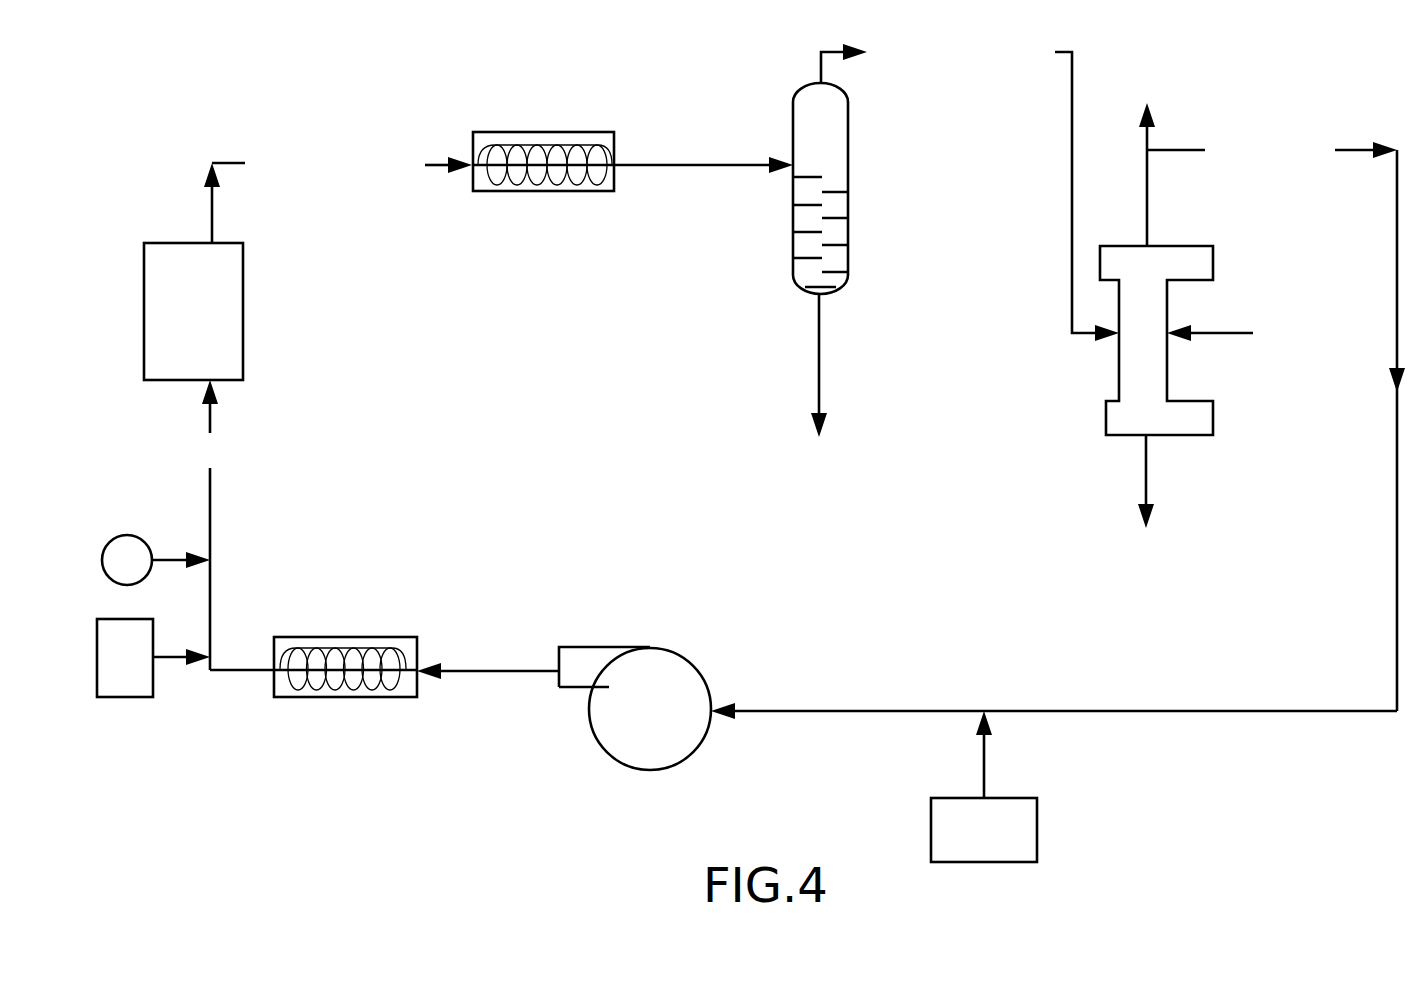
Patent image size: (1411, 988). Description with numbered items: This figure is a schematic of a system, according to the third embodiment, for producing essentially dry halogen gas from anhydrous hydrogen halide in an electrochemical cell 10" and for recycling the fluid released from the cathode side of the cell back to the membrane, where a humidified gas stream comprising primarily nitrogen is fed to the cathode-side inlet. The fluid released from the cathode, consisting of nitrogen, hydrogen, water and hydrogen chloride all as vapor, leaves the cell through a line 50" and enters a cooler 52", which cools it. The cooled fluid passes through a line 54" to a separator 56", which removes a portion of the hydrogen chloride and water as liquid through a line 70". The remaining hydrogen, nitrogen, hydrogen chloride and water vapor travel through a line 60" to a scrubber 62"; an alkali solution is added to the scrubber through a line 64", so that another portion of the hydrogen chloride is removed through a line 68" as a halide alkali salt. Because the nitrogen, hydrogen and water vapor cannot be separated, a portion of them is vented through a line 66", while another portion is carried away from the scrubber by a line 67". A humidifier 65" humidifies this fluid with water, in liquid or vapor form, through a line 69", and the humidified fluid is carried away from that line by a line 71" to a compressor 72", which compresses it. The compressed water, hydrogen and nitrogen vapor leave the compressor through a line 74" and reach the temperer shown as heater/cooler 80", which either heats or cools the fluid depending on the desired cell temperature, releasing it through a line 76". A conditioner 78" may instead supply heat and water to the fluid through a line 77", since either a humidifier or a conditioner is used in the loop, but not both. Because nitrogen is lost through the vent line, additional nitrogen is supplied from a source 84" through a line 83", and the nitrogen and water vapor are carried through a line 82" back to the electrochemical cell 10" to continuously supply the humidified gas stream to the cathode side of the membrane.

The electrochemical cell 10 is at (170, 243).
The line 50 is at (210, 180).
The cooler 52 is at (530, 191).
The line 54 is at (705, 162).
The separator 56 is at (800, 283).
The line 60 is at (1072, 143).
The scrubber 62 is at (1172, 246).
The line 64 is at (1235, 337).
The humidifier 65 is at (1098, 843).
The line 66 is at (1147, 205).
The line 67 is at (1397, 525).
The line 68 is at (1146, 463).
The line 69 is at (985, 757).
The line 70 is at (819, 372).
The line 71 is at (852, 711).
The compressor 72 is at (663, 648).
The line 74 is at (510, 668).
The line 76 is at (248, 672).
The line 77 is at (173, 662).
The conditioner 78 is at (125, 697).
The heater/cooler 80 is at (370, 637).
The line 82 is at (210, 478).
The line 83 is at (165, 567).
The source 84 is at (130, 535).